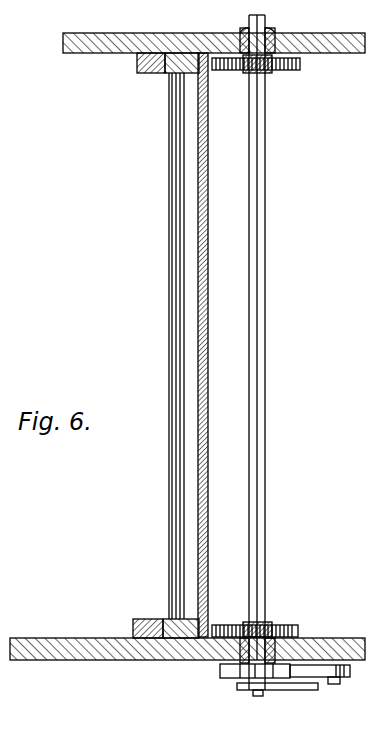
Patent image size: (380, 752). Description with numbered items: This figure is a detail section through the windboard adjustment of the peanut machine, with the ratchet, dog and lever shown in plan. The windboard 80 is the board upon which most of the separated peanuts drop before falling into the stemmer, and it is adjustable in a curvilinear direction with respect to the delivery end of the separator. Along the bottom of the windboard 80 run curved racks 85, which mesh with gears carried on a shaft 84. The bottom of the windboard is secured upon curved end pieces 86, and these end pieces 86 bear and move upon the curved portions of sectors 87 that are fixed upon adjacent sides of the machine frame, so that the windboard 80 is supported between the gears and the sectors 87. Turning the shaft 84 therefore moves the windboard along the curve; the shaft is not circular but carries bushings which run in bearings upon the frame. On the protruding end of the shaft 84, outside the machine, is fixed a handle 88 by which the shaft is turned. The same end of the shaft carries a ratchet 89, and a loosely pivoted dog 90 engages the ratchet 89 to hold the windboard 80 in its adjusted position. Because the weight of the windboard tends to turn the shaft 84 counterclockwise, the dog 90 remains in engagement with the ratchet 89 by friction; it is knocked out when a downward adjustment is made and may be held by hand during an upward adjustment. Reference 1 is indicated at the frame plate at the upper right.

The machine frame plate 1 is at (332, 25).
The windboard 80 is at (205, 208).
The shaft 84 is at (264, 353).
The rack 85 is at (209, 74).
The end piece 86 is at (300, 69).
The sector 87 is at (140, 622).
The handle 88 is at (276, 688).
The ratchet 89 is at (220, 678).
The dog 90 is at (330, 682).